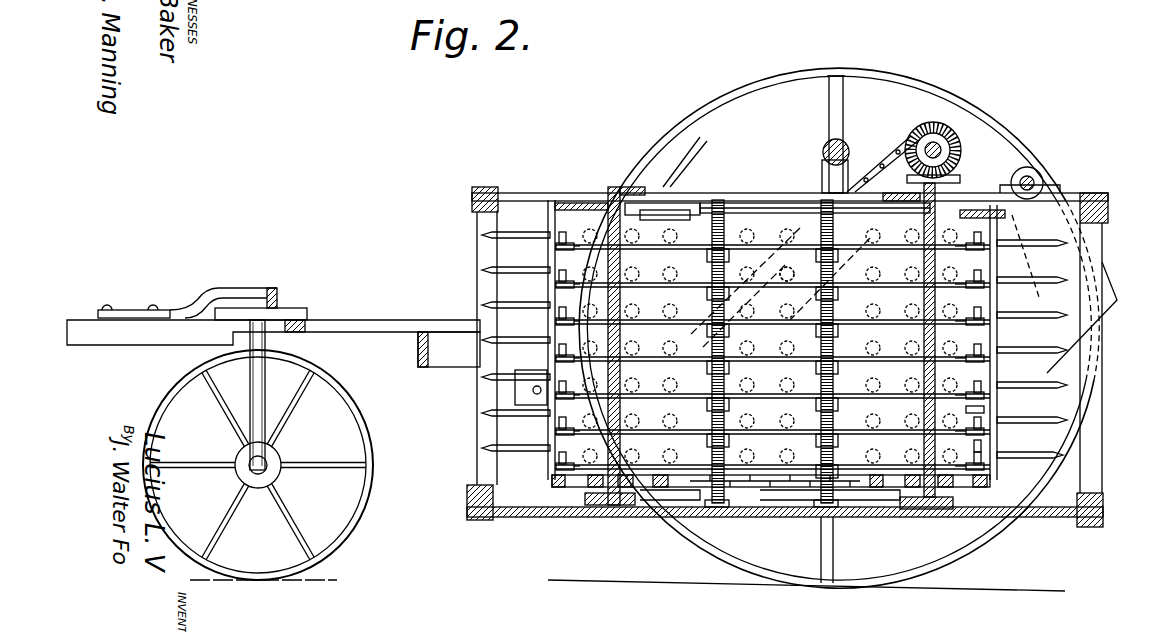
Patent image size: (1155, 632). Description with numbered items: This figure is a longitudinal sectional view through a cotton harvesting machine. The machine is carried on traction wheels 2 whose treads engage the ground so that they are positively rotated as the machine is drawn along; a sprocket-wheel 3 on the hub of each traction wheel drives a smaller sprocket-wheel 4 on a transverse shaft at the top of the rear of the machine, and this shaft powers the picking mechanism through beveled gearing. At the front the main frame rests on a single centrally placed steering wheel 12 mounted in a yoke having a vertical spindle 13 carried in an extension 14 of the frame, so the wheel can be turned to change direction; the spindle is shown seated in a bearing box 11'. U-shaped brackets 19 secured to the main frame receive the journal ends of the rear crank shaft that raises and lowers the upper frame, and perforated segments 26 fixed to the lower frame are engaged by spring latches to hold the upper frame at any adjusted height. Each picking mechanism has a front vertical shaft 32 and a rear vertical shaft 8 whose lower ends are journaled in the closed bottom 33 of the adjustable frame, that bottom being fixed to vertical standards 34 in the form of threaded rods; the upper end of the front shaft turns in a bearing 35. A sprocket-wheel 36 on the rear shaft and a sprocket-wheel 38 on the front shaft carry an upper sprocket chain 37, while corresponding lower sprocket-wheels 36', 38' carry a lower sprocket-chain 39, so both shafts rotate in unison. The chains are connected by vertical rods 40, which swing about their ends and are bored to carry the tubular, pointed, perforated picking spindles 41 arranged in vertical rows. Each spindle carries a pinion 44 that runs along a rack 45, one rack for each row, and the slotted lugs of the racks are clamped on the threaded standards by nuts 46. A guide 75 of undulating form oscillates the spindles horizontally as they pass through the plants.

The traction wheel 2 is at (878, 70).
The sprocket-wheel 3 is at (472, 216).
The sprocket-wheel 4 is at (913, 130).
The vertical shaft 8 is at (973, 410).
The bearing box 11' is at (430, 349).
The steering wheel 12 is at (350, 408).
The vertical spindle 13 is at (263, 338).
The extension 14 is at (367, 323).
The U-shaped bracket 19 is at (794, 266).
The segment 26 is at (1064, 294).
The vertical shaft 32 is at (772, 349).
The closed bottom 33 is at (647, 507).
The vertical standard 34 is at (727, 507).
The bearing 35 is at (617, 192).
The sprocket-wheel 36 is at (992, 315).
The sprocket-wheel 36' is at (965, 516).
The sprocket chain 37 is at (548, 202).
The sprocket-wheel 38 is at (660, 192).
The sprocket-wheel 38' is at (557, 506).
The sprocket-chain 39 is at (540, 483).
The vertical rod 40 is at (548, 257).
The picking spindle 41 is at (518, 448).
The pinion 44 is at (977, 452).
The rack 45 is at (653, 283).
The nut 46 is at (830, 467).
The guide 75 is at (782, 275).